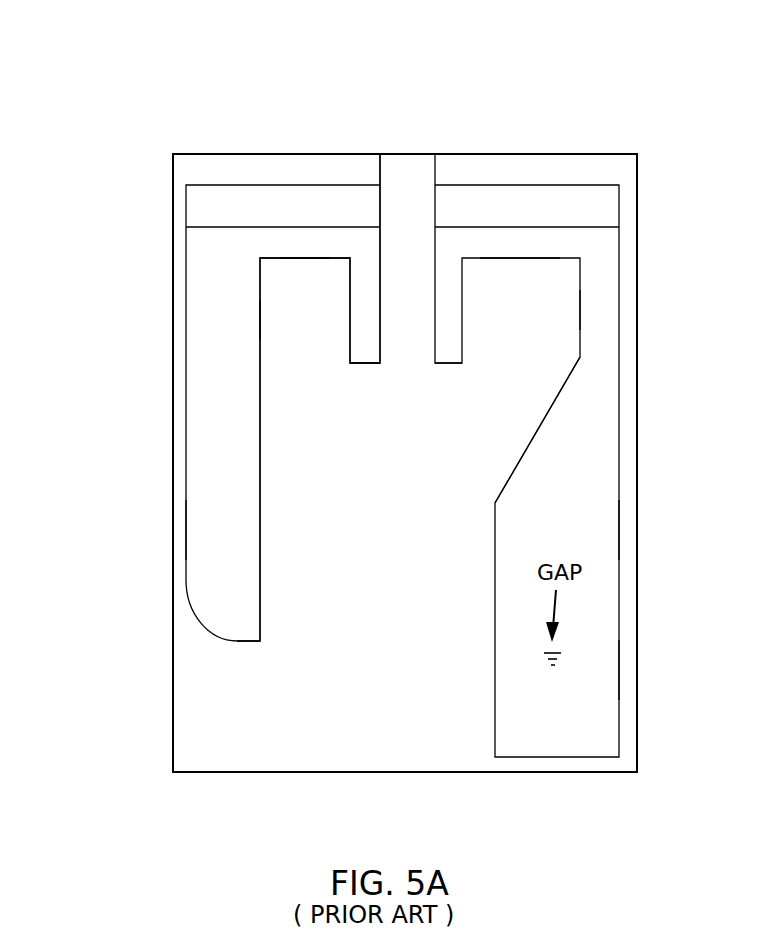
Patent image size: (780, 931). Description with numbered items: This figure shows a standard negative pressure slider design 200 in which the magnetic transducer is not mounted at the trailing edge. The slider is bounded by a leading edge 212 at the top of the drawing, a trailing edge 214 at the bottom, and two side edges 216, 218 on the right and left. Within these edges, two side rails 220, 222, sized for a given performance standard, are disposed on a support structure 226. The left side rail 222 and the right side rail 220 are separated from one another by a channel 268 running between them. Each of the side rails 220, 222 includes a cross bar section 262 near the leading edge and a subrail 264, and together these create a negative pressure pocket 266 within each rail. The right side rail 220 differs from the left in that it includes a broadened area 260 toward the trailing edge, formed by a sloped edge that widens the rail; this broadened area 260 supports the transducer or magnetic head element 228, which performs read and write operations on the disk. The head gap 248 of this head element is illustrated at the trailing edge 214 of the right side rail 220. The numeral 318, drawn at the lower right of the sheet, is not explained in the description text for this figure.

The negative pressure slider design 200 is at (290, 136).
The leading edge 212 is at (405, 152).
The trailing edge 214 is at (485, 772).
The side edge 216 is at (637, 460).
The side edge 218 is at (174, 456).
The right side rail 220 is at (582, 510).
The side rail 222 is at (218, 531).
The support structure 226 is at (222, 688).
The magnetic head element 228 is at (544, 653).
The head gap 248 is at (578, 655).
The broadened area 260 is at (495, 525).
The cross bar section 262 is at (300, 259).
The subrail 264 is at (364, 364).
The negative pressure pocket 266 is at (278, 319).
The channel 268 is at (408, 280).
The external element 318 is at (779, 737).